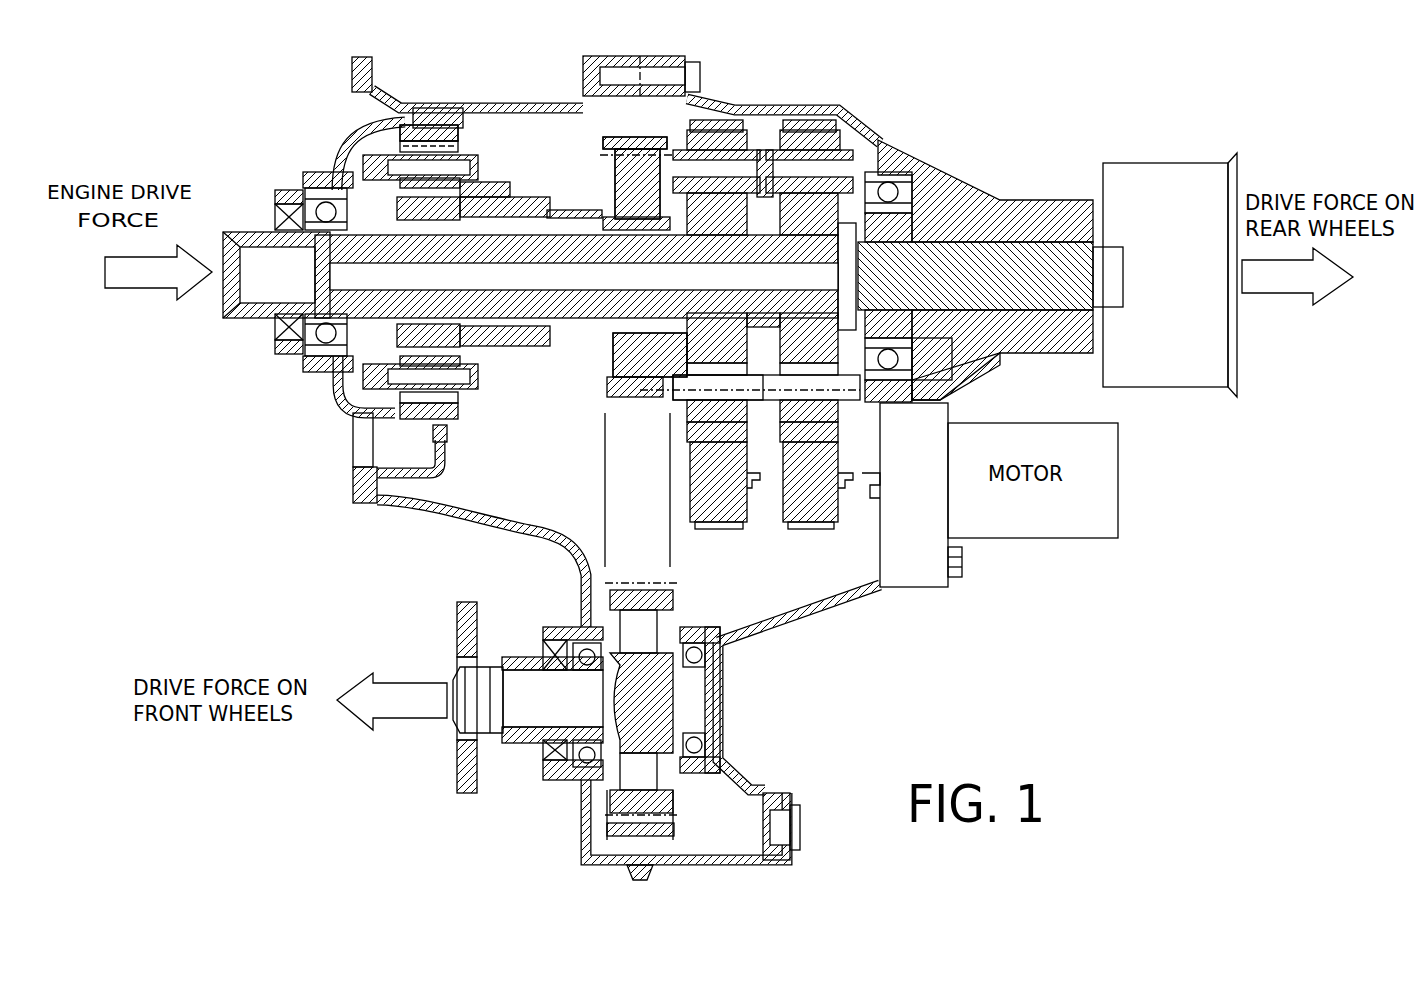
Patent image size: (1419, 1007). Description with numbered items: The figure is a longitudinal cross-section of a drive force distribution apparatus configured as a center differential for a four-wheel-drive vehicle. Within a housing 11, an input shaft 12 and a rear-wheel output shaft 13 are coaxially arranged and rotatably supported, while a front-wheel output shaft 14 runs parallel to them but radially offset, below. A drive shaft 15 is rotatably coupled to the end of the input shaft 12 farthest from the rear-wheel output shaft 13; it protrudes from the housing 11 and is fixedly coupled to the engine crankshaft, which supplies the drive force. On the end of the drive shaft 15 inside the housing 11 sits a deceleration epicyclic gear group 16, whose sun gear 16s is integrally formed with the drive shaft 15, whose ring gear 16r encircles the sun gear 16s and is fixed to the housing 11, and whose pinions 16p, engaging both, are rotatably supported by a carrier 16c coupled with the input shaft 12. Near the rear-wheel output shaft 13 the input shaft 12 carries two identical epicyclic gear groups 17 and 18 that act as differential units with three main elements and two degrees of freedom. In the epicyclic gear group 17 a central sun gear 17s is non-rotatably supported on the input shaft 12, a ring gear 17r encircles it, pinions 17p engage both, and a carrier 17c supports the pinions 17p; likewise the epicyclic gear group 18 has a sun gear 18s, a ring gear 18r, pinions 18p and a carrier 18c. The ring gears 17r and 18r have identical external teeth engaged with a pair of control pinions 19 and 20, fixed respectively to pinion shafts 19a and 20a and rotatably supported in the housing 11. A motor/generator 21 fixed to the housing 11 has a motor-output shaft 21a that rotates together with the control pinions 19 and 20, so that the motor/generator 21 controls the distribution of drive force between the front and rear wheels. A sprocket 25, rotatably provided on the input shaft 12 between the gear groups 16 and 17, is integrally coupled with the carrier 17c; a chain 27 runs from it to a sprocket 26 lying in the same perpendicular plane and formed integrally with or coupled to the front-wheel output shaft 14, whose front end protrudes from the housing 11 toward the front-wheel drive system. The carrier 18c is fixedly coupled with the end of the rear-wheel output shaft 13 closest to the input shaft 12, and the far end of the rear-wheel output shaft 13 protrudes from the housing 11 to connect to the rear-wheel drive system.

The housing 11 is at (660, 55).
The input shaft 12 is at (580, 236).
The rear-wheel output shaft 13 is at (1023, 275).
The front-wheel output shaft 14 is at (538, 703).
The drive shaft 15 is at (242, 338).
The epicyclic gear group 16 is at (425, 124).
The ring gear 16r is at (447, 124).
The pinions 16p is at (458, 146).
The sun gear 16s is at (455, 183).
The carrier 16c is at (510, 190).
The epicyclic gear group 17 is at (722, 120).
The central sun gear 17s is at (620, 348).
The carrier 17c is at (690, 420).
The pinions 17p is at (690, 430).
The ring gear 17r is at (690, 440).
The epicyclic gear group 18 is at (808, 120).
The central sun gear 18s is at (895, 355).
The carrier 18c is at (908, 395).
The pinions 18p is at (840, 414).
The ring gear 18r is at (840, 444).
The control pinion 19 is at (706, 530).
The pinion shaft 19a is at (754, 490).
The control pinion 20 is at (798, 530).
The pinion shaft 20a is at (848, 490).
The motor/generator 21 is at (1030, 540).
The motor-output shaft 21a is at (876, 498).
The sprocket 25 is at (602, 202).
The sprocket 26 is at (613, 600).
The chain 27 is at (605, 522).